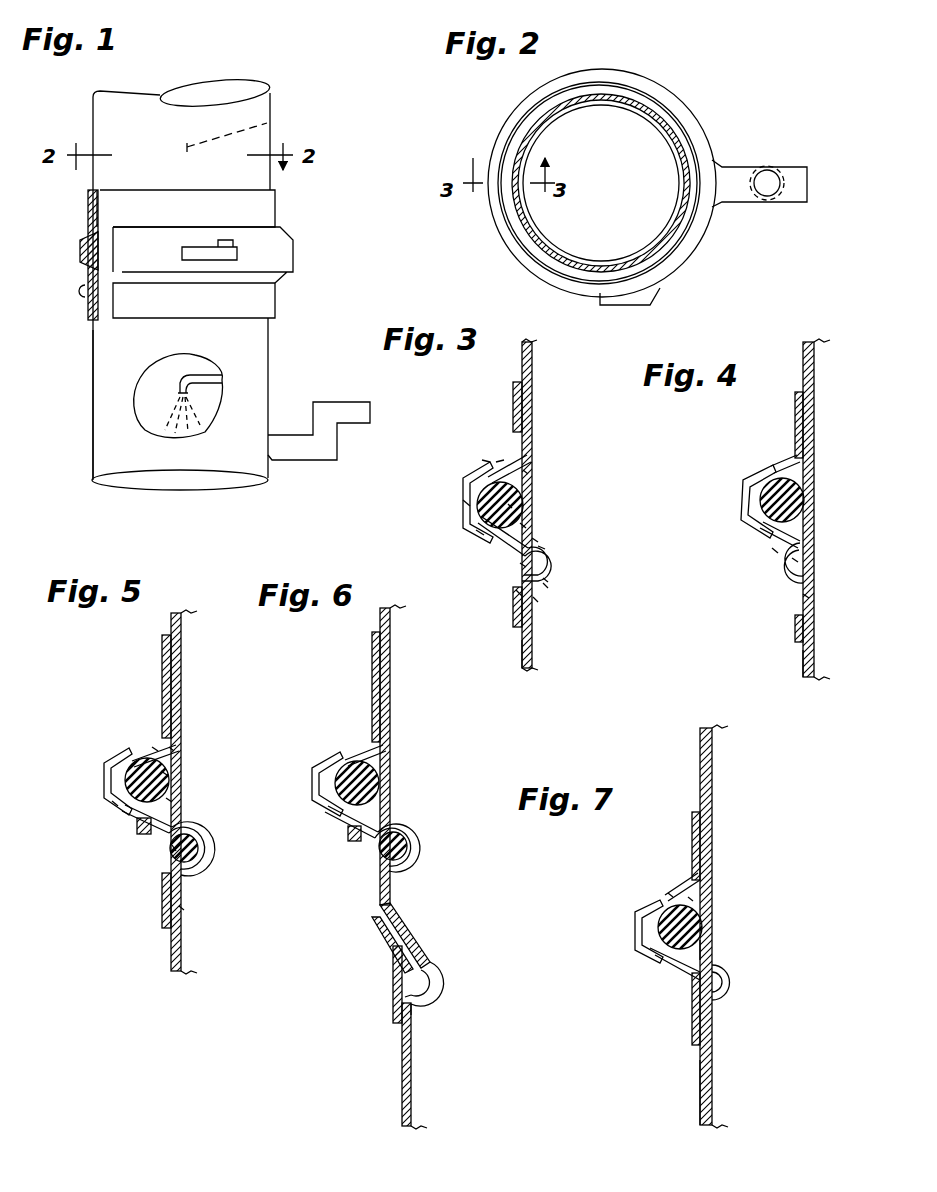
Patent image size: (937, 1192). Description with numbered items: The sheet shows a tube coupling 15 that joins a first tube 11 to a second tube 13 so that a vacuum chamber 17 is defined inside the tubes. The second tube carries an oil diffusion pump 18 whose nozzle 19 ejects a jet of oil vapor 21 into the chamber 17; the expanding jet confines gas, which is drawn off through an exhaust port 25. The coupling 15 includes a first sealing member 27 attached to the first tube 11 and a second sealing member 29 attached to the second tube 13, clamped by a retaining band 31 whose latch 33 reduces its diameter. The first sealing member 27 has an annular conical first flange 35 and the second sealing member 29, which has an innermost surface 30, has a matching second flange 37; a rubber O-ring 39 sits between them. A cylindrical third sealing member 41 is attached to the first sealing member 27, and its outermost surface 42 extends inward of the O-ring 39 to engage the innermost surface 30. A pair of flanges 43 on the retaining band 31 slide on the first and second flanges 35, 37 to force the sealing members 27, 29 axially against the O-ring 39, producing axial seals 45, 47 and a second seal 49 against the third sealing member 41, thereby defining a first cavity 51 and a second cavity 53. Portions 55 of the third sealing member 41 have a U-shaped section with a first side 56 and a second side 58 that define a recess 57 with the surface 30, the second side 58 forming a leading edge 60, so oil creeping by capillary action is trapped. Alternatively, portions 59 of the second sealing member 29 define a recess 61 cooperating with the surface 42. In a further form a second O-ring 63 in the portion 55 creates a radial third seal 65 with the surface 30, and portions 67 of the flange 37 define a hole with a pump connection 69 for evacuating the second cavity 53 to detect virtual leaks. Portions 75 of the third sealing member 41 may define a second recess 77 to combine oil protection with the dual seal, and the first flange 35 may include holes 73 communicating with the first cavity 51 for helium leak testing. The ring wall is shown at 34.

In FIG. 1, the first tube 11 is at (118, 115).
In FIG. 2, the first tube 11 is at (636, 115).
In FIG. 3, the first tube 11 is at (535, 360).
In FIG. 4, the first tube 11 is at (803, 360).
In FIG. 5, the first tube 11 is at (177, 625).
In FIG. 6, the first tube 11 is at (391, 640).
In FIG. 7, the first tube 11 is at (712, 757).
In FIG. 1, the second tube 13 is at (253, 340).
In FIG. 3, the second tube 13 is at (522, 655).
In FIG. 4, the second tube 13 is at (812, 662).
In FIG. 6, the second tube 13 is at (412, 1070).
In FIG. 7, the second tube 13 is at (712, 1068).
In FIG. 1, the tube coupling 15 is at (304, 222).
In FIG. 1, the chamber 17 is at (280, 124).
In FIG. 2, the chamber 17 is at (602, 215).
In FIG. 3, the chamber 17 is at (579, 377).
In FIG. 4, the chamber 17 is at (844, 372).
In FIG. 5, the chamber 17 is at (215, 655).
In FIG. 6, the chamber 17 is at (417, 669).
In FIG. 7, the chamber 17 is at (759, 787).
In FIG. 1, the oil diffusion pump 18 is at (166, 360).
In FIG. 1, the nozzle 19 is at (140, 390).
In FIG. 1, the oil vapor 21 is at (190, 425).
In FIG. 3, the oil vapor 21 is at (547, 580).
In FIG. 4, the oil vapor 21 is at (795, 560).
In FIG. 1, the exhaust port 25 is at (300, 450).
In FIG. 2, the exhaust port 25 is at (738, 173).
In FIG. 1, the first sealing member 27 is at (94, 208).
In FIG. 2, the first sealing member 27 is at (582, 95).
In FIG. 3, the first sealing member 27 is at (510, 392).
In FIG. 4, the first sealing member 27 is at (798, 420).
In FIG. 5, the first sealing member 27 is at (163, 668).
In FIG. 6, the first sealing member 27 is at (372, 680).
In FIG. 1, the second sealing member 29 is at (88, 305).
In FIG. 3, the second sealing member 29 is at (514, 615).
In FIG. 4, the second sealing member 29 is at (795, 623).
In FIG. 5, the second sealing member 29 is at (160, 890).
In FIG. 6, the second sealing member 29 is at (395, 975).
In FIG. 7, the second sealing member 29 is at (695, 1010).
In FIG. 3, the innermost surface 30 is at (518, 595).
In FIG. 4, the innermost surface 30 is at (810, 597).
In FIG. 5, the innermost surface 30 is at (178, 905).
In FIG. 1, the retaining band 31 is at (78, 255).
In FIG. 2, the retaining band 31 is at (605, 70).
In FIG. 3, the retaining band 31 is at (465, 488).
In FIG. 4, the retaining band 31 is at (743, 495).
In FIG. 5, the retaining band 31 is at (100, 762).
In FIG. 6, the retaining band 31 is at (328, 760).
In FIG. 7, the retaining band 31 is at (640, 940).
In FIG. 1, the latch 33 is at (195, 250).
In FIG. 2, the latch 33 is at (630, 300).
In FIG. 5, the ring wall 34 is at (160, 770).
In FIG. 3, the first flange 35 is at (500, 462).
In FIG. 5, the first flange 35 is at (150, 745).
In FIG. 7, the first flange 35 is at (670, 895).
In FIG. 3, the second flange 37 is at (500, 548).
In FIG. 5, the second flange 37 is at (110, 800).
In FIG. 7, the second flange 37 is at (665, 970).
In FIG. 3, the O-ring 39 is at (520, 492).
In FIG. 4, the O-ring 39 is at (790, 492).
In FIG. 5, the O-ring 39 is at (147, 780).
In FIG. 6, the O-ring 39 is at (370, 775).
In FIG. 7, the O-ring 39 is at (685, 920).
In FIG. 3, the third sealing member 41 is at (533, 462).
In FIG. 5, the third sealing member 41 is at (175, 725).
In FIG. 7, the third sealing member 41 is at (712, 948).
In FIG. 3, the outermost surface 42 is at (522, 525).
In FIG. 4, the outermost surface 42 is at (800, 528).
In FIG. 3, the flanges 43 is at (466, 506).
In FIG. 3, the seal 45 is at (482, 460).
In FIG. 3, the seal 47 is at (480, 533).
In FIG. 3, the second seal 49 is at (510, 506).
In FIG. 3, the first cavity 51 is at (523, 472).
In FIG. 5, the first cavity 51 is at (168, 745).
In FIG. 7, the first cavity 51 is at (690, 900).
In FIG. 3, the second cavity 53 is at (535, 540).
In FIG. 5, the second cavity 53 is at (165, 797).
In FIG. 3, the portions 55 is at (566, 568).
In FIG. 5, the portions 55 is at (208, 856).
In FIG. 6, the portions 55 is at (421, 859).
In FIG. 3, the first side 56 is at (542, 548).
In FIG. 3, the recess 57 is at (522, 565).
In FIG. 3, the second side 58 is at (547, 586).
In FIG. 4, the portions 59 is at (778, 570).
In FIG. 3, the leading edge 60 is at (536, 600).
In FIG. 4, the recess 61 is at (775, 552).
In FIG. 5, the O-ring 63 is at (195, 840).
In FIG. 6, the O-ring 63 is at (405, 836).
In FIG. 5, the third seal 65 is at (170, 845).
In FIG. 5, the portions 67 is at (165, 813).
In FIG. 6, the portions 67 is at (368, 800).
In FIG. 5, the pump connection 69 is at (135, 822).
In FIG. 6, the pump connection 69 is at (350, 838).
In FIG. 7, the holes 73 is at (676, 888).
In FIG. 6, the portions 75 is at (428, 962).
In FIG. 6, the second recess 77 is at (431, 984).